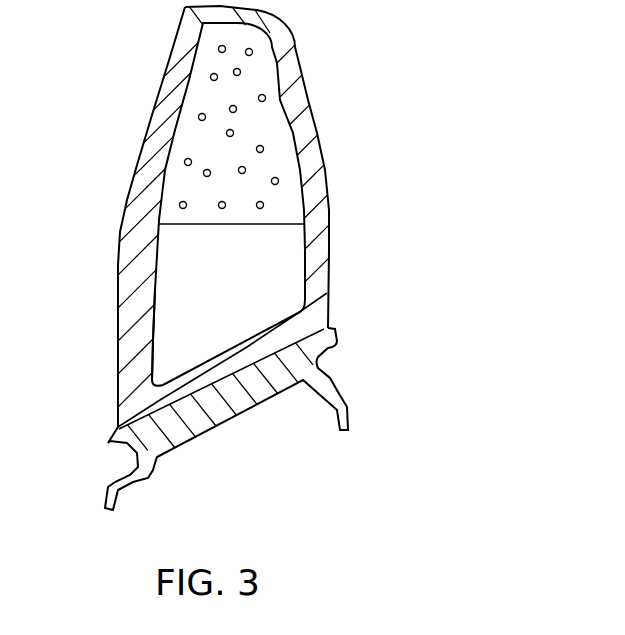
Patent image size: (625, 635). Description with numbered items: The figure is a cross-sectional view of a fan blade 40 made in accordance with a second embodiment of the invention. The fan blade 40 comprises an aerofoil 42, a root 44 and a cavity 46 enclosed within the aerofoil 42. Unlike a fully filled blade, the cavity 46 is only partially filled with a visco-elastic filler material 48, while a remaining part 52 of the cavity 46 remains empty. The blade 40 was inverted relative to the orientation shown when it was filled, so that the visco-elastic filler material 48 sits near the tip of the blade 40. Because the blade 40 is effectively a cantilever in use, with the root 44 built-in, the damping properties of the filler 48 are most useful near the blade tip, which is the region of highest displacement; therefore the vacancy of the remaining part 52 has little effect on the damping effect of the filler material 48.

The fan blade 40 is at (239, 258).
The aerofoil 42 is at (288, 43).
The root 44 is at (321, 364).
The cavity 46 is at (293, 267).
The visco-elastic filler material 48 is at (172, 197).
The remaining part of the cavity 52 is at (165, 328).